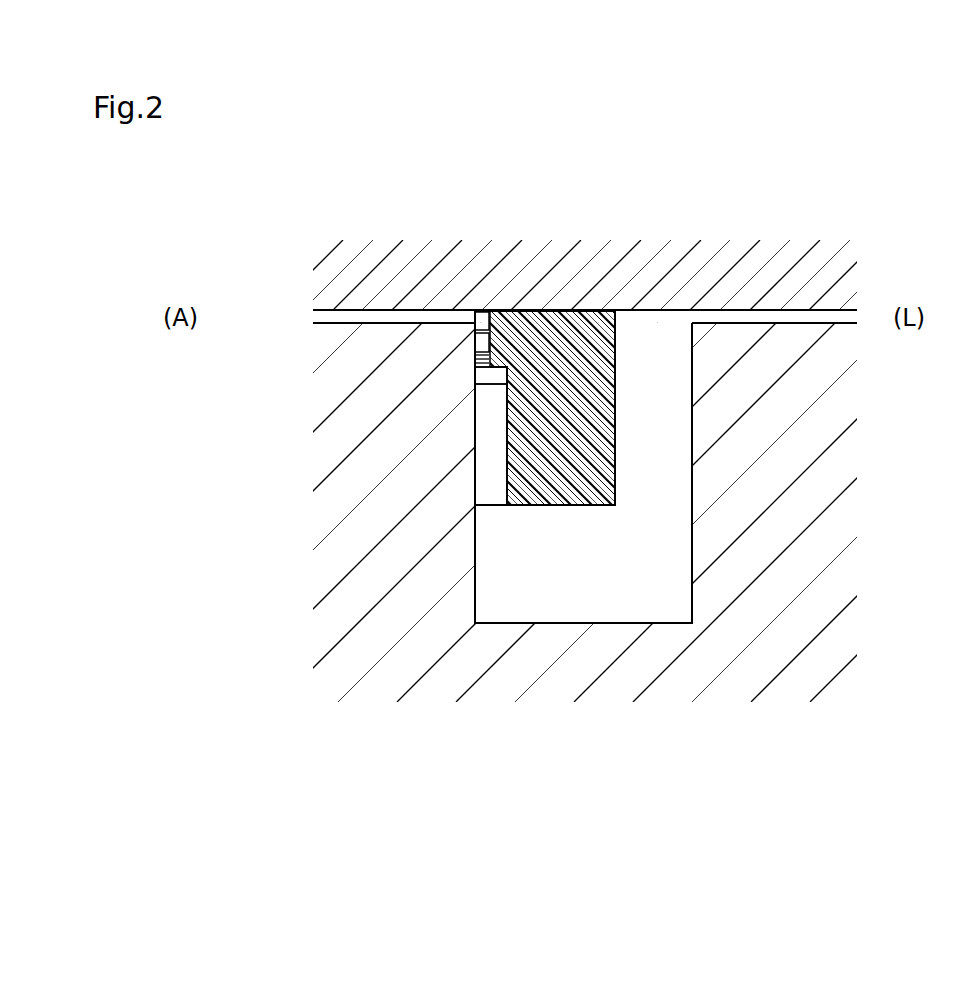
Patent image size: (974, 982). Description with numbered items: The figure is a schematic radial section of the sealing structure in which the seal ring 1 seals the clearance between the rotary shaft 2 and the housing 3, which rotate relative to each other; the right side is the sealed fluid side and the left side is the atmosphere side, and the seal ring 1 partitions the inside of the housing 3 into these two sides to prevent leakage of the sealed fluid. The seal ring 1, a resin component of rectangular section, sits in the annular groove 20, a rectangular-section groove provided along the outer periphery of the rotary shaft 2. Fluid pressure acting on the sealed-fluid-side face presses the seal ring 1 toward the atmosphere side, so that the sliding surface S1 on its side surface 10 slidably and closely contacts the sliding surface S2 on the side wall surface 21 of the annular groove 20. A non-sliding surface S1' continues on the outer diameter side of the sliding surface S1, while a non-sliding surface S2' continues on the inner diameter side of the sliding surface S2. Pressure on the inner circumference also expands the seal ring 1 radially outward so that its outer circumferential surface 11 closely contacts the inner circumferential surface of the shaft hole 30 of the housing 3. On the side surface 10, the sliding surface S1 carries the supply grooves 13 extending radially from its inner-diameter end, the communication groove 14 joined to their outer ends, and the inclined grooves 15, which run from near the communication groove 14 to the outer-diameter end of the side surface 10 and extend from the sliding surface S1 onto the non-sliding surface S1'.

The seal ring 1 is at (626, 343).
The rotary shaft 2 is at (308, 635).
The housing 3 is at (307, 278).
The side surface 10 is at (537, 192).
The outer circumferential surface 11 is at (592, 300).
The supply grooves 13 is at (490, 420).
The communication groove 14 is at (490, 373).
The inclined grooves 15 is at (488, 328).
The annular groove 20 is at (664, 516).
The side wall surface 21 is at (245, 480).
The shaft hole 30 is at (784, 310).
The sliding surface S1 is at (457, 258).
The non-sliding surface S1' is at (497, 254).
The sliding surface S2 is at (368, 488).
The non-sliding surface S2' is at (370, 576).